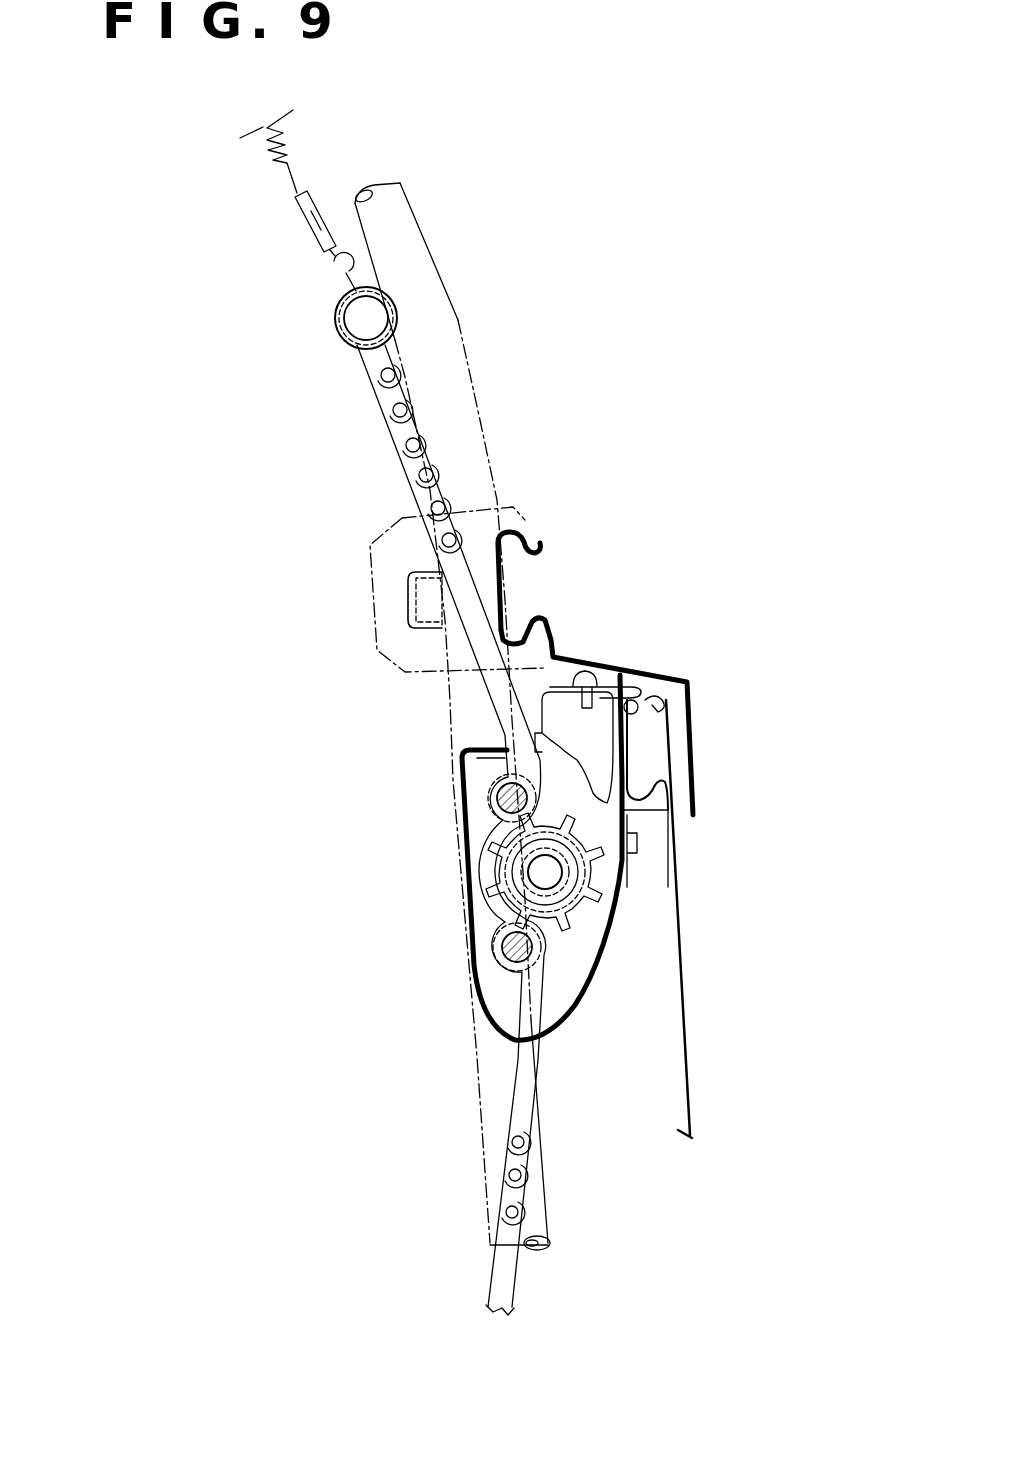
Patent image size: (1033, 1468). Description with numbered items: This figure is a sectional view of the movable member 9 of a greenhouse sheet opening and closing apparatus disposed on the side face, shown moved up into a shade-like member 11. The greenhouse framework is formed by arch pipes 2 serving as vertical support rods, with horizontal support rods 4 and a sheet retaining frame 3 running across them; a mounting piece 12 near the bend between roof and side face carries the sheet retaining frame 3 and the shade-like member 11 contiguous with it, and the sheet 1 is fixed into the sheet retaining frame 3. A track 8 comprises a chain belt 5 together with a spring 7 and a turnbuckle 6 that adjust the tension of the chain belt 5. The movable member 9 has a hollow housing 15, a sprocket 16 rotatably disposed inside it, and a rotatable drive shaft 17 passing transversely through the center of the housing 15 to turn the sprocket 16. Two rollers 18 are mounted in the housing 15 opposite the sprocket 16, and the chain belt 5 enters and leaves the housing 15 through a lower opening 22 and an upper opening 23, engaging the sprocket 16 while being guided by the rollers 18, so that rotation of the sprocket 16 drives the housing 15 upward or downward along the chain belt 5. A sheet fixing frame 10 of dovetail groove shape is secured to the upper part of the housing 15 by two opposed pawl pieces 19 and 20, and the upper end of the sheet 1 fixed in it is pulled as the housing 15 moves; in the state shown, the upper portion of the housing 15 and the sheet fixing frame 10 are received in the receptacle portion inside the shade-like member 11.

The sheet 1 is at (690, 1060).
The arch pipe 2 is at (435, 326).
The sheet retaining frame 3 is at (518, 532).
The horizontal support rod 4 is at (354, 342).
The chain belt 5 is at (407, 430).
The turnbuckle 6 is at (313, 214).
The spring 7 is at (285, 126).
The track 8 is at (303, 150).
The movable member 9 is at (624, 930).
The sheet fixing frame 10 is at (668, 768).
The shade-like member 11 is at (687, 698).
The mounting piece 12 is at (385, 633).
The housing 15 is at (600, 990).
The sprocket 16 is at (622, 892).
The rotatable drive shaft 17 is at (545, 875).
The roller 18 is at (506, 797).
The pawl piece 19 is at (648, 840).
The pawl piece 20 is at (626, 688).
The opening 22 is at (552, 1042).
The opening 23 is at (460, 727).